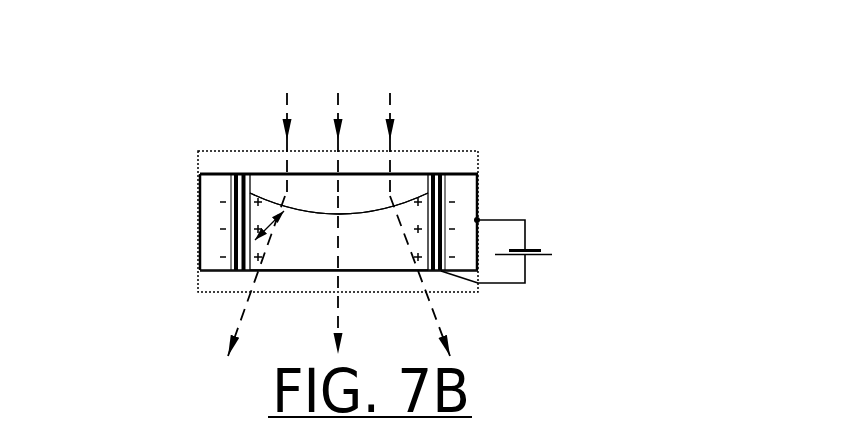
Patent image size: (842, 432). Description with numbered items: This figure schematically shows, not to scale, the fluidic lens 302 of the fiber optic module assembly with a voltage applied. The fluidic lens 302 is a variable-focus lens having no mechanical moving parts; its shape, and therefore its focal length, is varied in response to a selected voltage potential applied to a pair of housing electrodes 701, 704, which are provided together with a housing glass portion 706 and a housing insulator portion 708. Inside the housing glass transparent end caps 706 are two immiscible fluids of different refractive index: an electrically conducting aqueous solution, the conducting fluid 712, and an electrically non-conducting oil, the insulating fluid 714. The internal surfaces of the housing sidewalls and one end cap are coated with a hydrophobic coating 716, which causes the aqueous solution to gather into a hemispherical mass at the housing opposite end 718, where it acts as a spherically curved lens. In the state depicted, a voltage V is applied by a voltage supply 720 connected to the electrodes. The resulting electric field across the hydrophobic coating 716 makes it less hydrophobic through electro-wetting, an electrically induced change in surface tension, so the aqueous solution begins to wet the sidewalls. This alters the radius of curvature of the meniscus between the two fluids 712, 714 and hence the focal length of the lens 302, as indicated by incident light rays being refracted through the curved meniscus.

The fluidic lens 302 is at (482, 73).
The housing glass portion 706 is at (488, 132).
The electrode 701 is at (197, 262).
The housing electrode 704 is at (198, 290).
The housing insulator portion 708 is at (232, 190).
The hydrophobic coating 716 is at (252, 172).
The non-conducting fluid 714 is at (420, 186).
The conducting fluid 712 is at (543, 317).
The housing opposite end 718 is at (378, 273).
The voltage supply 720 is at (552, 254).